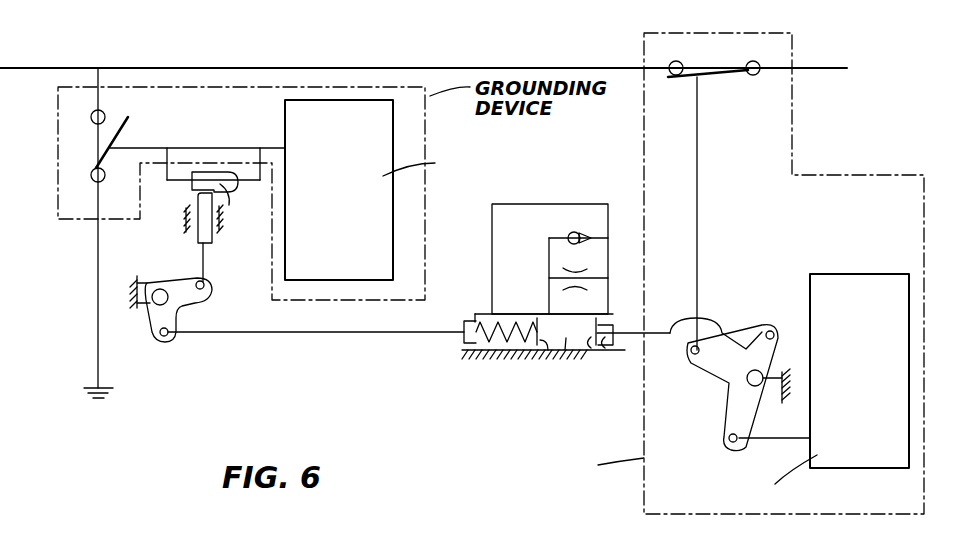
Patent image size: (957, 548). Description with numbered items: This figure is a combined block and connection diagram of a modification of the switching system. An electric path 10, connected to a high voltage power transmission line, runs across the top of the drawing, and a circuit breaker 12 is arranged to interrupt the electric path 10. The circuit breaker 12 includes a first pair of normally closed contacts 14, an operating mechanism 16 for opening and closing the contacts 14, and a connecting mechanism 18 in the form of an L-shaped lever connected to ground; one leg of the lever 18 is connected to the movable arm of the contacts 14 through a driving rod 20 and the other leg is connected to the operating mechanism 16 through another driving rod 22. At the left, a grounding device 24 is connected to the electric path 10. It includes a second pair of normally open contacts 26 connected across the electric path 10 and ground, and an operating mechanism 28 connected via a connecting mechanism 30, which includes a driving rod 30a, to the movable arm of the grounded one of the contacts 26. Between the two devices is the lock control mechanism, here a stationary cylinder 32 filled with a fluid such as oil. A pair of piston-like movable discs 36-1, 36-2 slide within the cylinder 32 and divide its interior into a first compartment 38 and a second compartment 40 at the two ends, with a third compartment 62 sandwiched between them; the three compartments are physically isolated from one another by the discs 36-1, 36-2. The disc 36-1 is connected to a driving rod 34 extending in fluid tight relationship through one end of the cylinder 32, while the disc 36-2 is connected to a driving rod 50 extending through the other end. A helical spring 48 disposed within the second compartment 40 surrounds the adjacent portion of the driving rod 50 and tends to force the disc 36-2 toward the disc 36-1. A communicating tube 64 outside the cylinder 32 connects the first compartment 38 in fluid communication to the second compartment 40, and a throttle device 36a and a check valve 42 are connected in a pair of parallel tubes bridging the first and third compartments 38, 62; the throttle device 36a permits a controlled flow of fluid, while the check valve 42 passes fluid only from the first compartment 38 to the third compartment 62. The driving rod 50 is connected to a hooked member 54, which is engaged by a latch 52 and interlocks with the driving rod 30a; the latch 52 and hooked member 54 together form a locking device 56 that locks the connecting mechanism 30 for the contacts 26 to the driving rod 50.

The electric path 10 is at (509, 68).
The circuit breaker 12 is at (722, 18).
The first pair of normally closed contacts 14 is at (722, 78).
The operating mechanism 16 is at (852, 274).
The connecting mechanism 18 is at (722, 412).
The driving rod 20 is at (699, 194).
The driving rod 22 is at (788, 435).
The grounding device 24 is at (229, 87).
The second pair of normally open contacts 26 is at (123, 128).
The operating mechanism 28 is at (285, 112).
The connecting mechanism 30 is at (172, 211).
The driving rod 30a is at (210, 148).
The stationary cylinder 32 is at (560, 346).
The driving rod 34 is at (620, 338).
The throttle device 36a is at (550, 268).
The movable disc 36-1 is at (588, 352).
The movable disc 36-2 is at (552, 352).
The first compartment 38 is at (604, 352).
The second compartment 40 is at (471, 346).
The check valve 42 is at (567, 236).
The helical spring 48 is at (493, 352).
The driving rod 50 is at (241, 334).
The latch 52 is at (203, 252).
The hooked member 54 is at (224, 187).
The locking device 56 is at (256, 267).
The third compartment 62 is at (565, 353).
The communicating tube 64 is at (574, 204).